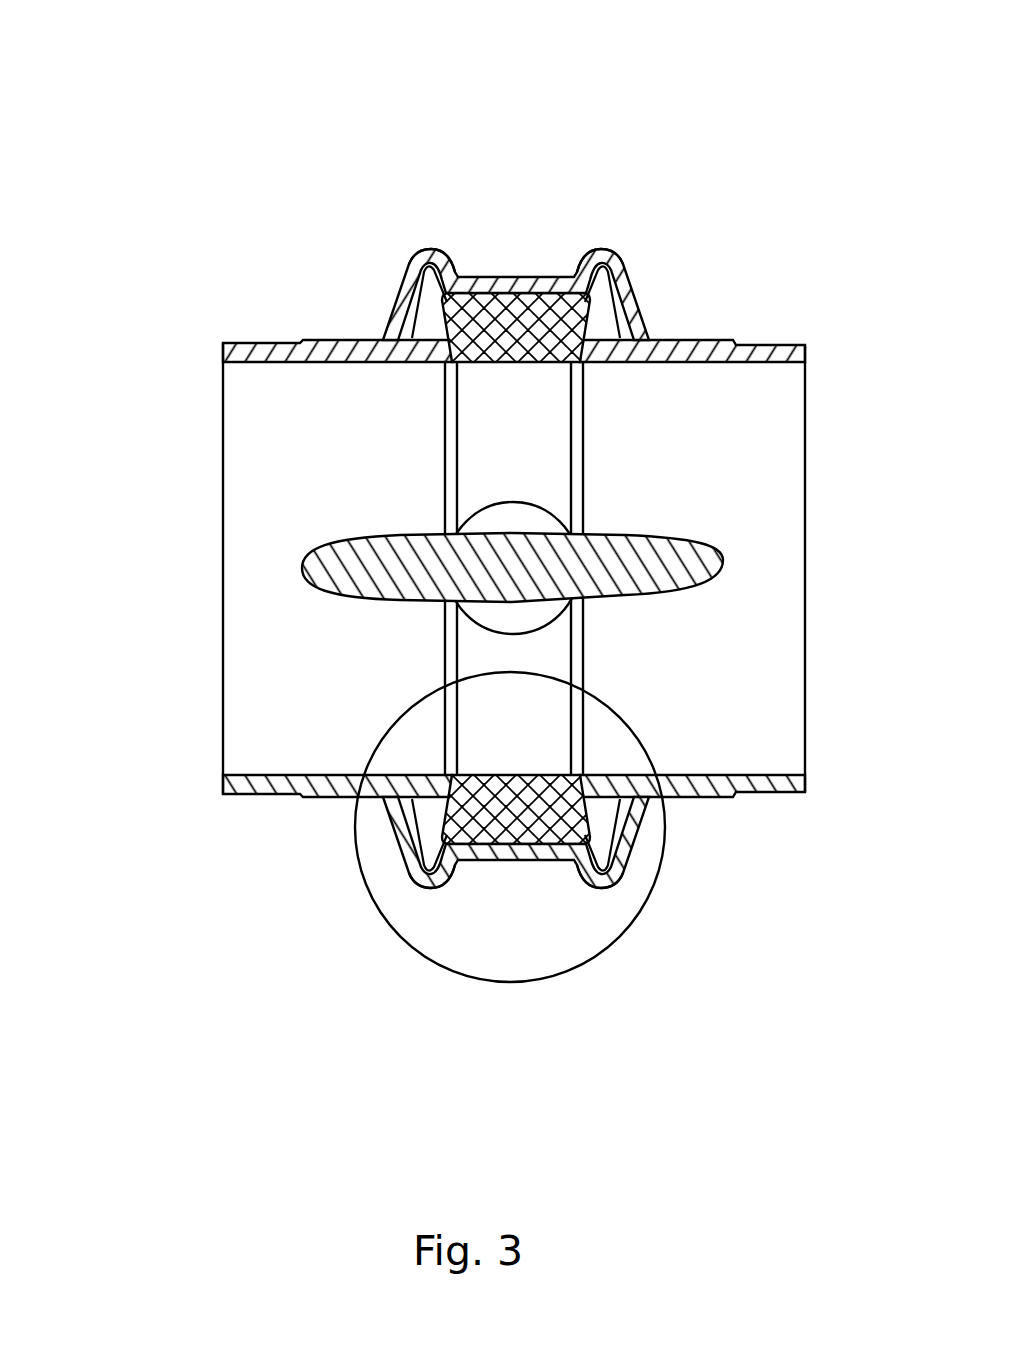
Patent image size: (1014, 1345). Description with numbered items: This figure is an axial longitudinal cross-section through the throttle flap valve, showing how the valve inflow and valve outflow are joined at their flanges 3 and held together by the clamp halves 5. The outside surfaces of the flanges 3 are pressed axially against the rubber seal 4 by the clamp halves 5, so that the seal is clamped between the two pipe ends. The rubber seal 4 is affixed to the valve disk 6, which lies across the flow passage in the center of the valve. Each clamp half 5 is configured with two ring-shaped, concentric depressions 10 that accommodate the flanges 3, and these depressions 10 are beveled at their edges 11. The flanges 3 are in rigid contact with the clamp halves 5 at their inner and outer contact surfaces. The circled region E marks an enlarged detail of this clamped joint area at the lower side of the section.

The flange 3 is at (403, 343).
The rubber seal 4 is at (523, 322).
The clamp half 5 is at (415, 265).
The valve disk 6 is at (388, 567).
The ring-shaped concentric depression 10 is at (434, 262).
The beveled edge 11 is at (410, 290).
The detail circle E is at (663, 823).